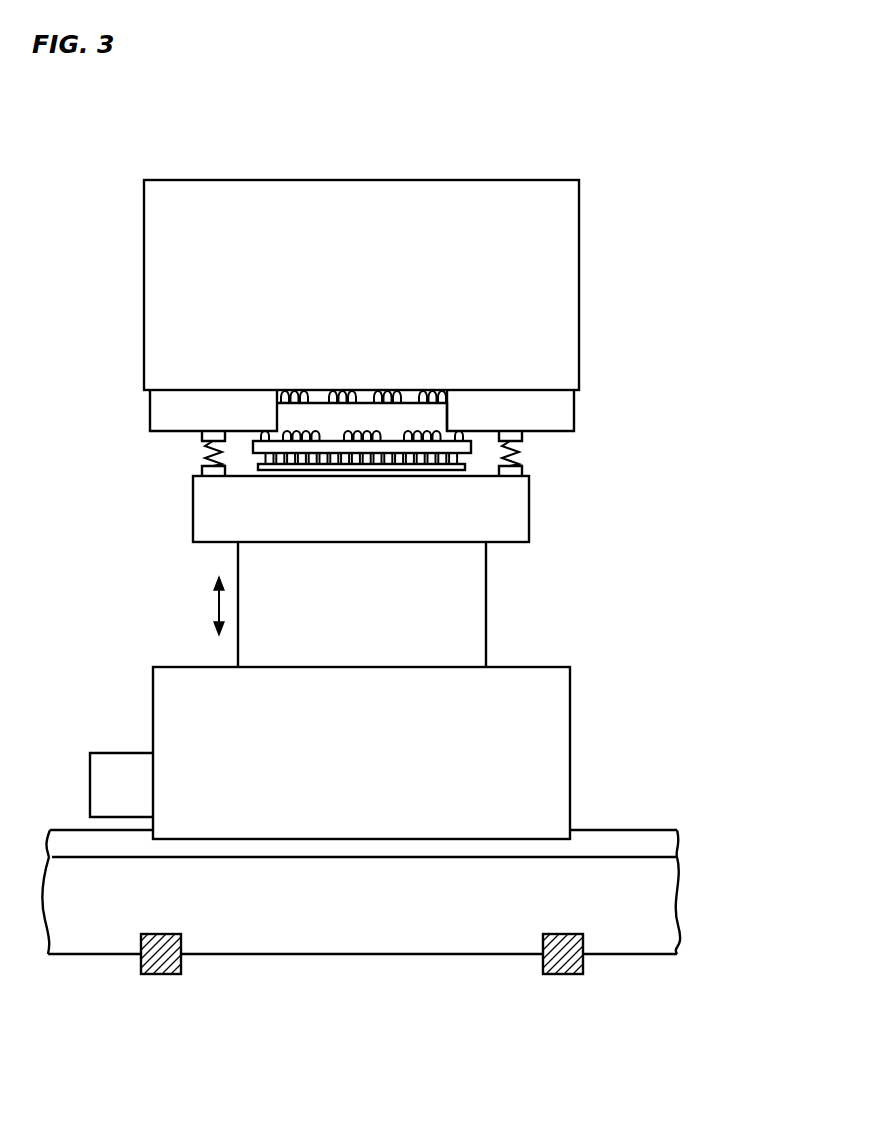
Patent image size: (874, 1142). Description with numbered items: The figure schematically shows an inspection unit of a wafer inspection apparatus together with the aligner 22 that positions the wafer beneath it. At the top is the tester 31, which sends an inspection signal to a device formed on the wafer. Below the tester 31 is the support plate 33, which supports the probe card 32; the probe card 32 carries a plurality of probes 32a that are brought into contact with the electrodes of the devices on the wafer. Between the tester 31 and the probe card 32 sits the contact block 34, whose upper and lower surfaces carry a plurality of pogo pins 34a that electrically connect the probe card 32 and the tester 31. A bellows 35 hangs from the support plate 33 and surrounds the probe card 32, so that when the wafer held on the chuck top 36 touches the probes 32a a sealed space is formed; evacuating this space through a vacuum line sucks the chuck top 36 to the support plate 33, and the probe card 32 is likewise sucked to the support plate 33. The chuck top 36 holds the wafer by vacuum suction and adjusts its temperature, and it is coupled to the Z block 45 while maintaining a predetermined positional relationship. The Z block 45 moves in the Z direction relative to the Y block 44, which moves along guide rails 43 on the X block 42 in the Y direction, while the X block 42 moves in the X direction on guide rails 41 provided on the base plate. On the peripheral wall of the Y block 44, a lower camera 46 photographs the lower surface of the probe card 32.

The aligner 22 is at (635, 674).
The tester 31 is at (144, 284).
The probe card 32 is at (250, 446).
The probes 32a is at (260, 459).
The support plate 33 is at (150, 412).
The contact block 34 is at (433, 417).
The pogo pins 34a is at (313, 395).
The bellows 35 is at (513, 450).
The chuck top 36 is at (529, 507).
The guide rails 41 is at (163, 968).
The X block 42 is at (660, 912).
The guide rails 43 is at (667, 843).
The Y block 44 is at (571, 757).
The Z block 45 is at (486, 604).
The lower camera 46 is at (90, 783).